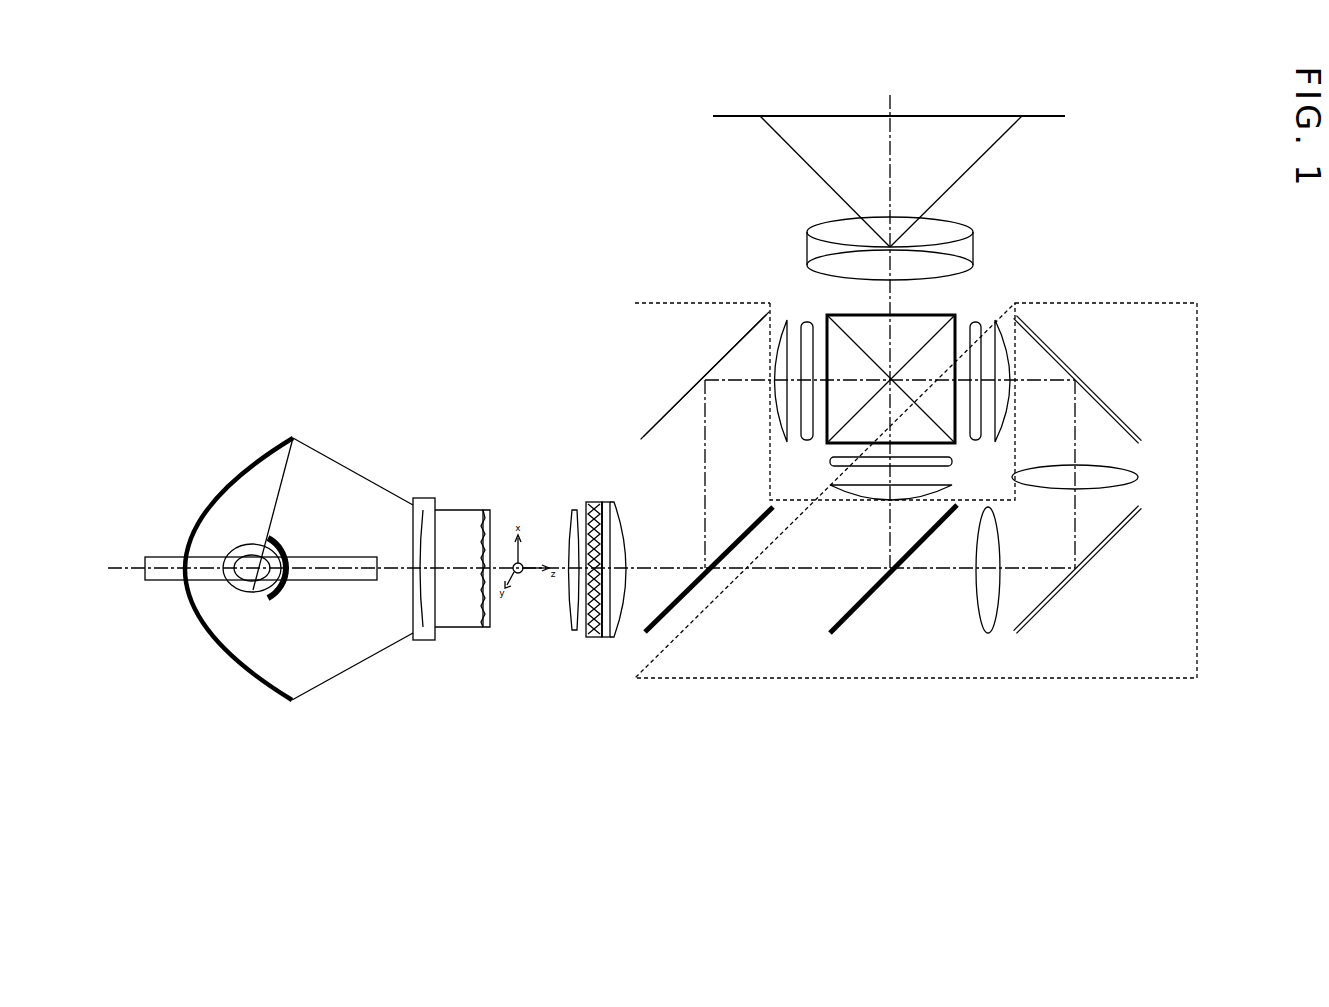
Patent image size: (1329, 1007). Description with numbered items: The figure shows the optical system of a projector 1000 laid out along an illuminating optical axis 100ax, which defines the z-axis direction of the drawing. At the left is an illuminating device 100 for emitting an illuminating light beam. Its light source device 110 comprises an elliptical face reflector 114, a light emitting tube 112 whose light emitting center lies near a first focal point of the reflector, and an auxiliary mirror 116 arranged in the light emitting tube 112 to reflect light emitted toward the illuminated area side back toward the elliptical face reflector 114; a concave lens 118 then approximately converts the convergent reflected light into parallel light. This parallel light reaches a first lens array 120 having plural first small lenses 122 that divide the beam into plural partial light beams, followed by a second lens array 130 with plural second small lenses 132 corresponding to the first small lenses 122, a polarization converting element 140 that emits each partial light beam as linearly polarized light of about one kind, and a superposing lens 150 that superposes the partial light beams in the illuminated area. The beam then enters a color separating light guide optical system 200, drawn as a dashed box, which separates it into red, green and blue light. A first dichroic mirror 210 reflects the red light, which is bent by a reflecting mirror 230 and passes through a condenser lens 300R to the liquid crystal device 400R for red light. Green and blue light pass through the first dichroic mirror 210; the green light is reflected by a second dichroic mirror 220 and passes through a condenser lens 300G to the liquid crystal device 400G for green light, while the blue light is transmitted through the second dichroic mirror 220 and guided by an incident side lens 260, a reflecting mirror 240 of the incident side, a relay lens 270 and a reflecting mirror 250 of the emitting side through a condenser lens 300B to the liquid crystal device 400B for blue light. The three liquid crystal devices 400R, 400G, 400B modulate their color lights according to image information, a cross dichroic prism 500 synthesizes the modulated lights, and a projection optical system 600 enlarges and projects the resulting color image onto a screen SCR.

The projector 1000 is at (536, 309).
The illuminating device 100 is at (630, 765).
The illuminating optical axis 100ax is at (130, 566).
The light source device 110 is at (290, 601).
The light emitting tube 112 is at (255, 595).
The elliptical face reflector 114 is at (249, 668).
The auxiliary mirror 116 is at (270, 600).
The concave lens 118 is at (395, 615).
The first lens array 120 is at (467, 594).
The first small lenses 122 is at (483, 508).
The second lens array 130 is at (572, 632).
The second small lenses 132 is at (592, 503).
The polarization converting element 140 is at (617, 500).
The superposing lens 150 is at (608, 640).
The color separating light guide optical system 200 is at (975, 680).
The first dichroic mirror 210 is at (667, 620).
The second dichroic mirror 220 is at (848, 617).
The reflecting mirror 230 is at (678, 400).
The reflecting mirror of the incident side 240 is at (1040, 620).
The reflecting mirror of the emitting side 250 is at (1118, 414).
The incident side lens 260 is at (988, 633).
The relay lens 270 is at (1140, 480).
The condenser lens 300R is at (775, 320).
The condenser lens 300G is at (955, 493).
The condenser lens 300B is at (1005, 320).
The liquid crystal device for red light 400R is at (806, 322).
The liquid crystal device for green light 400G is at (952, 463).
The liquid crystal device for blue light 400B is at (975, 322).
The cross dichroic prism 500 is at (830, 315).
The projection optical system 600 is at (975, 248).
The screen SCR is at (745, 118).